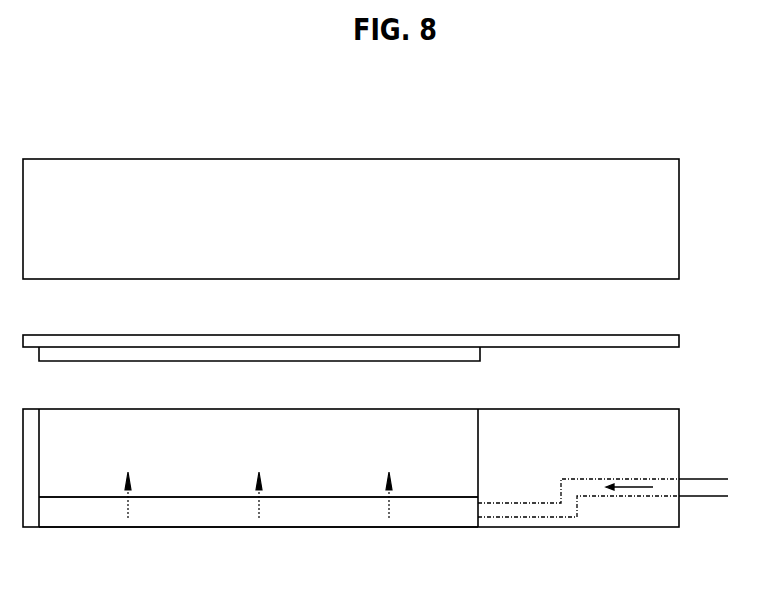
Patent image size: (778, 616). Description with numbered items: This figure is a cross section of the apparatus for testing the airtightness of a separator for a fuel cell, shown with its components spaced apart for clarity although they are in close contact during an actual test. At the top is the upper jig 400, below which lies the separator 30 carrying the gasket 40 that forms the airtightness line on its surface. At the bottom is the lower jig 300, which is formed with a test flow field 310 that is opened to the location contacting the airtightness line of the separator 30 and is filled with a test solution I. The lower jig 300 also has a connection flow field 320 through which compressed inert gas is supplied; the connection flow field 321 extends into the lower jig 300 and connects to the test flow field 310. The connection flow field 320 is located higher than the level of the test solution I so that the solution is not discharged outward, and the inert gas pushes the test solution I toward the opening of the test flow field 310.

The upper jig 400 is at (343, 170).
The separator 30 is at (682, 340).
The gasket 40 is at (480, 352).
The lower jig 300 is at (665, 437).
The test solution I is at (326, 475).
The test flow field 310 is at (443, 515).
The connection flow field 320 is at (703, 488).
The connection flow field 321 is at (544, 510).